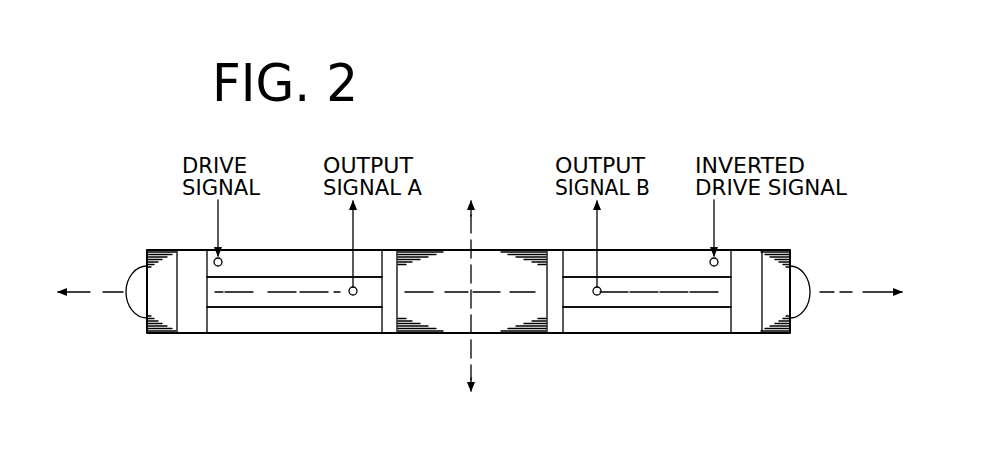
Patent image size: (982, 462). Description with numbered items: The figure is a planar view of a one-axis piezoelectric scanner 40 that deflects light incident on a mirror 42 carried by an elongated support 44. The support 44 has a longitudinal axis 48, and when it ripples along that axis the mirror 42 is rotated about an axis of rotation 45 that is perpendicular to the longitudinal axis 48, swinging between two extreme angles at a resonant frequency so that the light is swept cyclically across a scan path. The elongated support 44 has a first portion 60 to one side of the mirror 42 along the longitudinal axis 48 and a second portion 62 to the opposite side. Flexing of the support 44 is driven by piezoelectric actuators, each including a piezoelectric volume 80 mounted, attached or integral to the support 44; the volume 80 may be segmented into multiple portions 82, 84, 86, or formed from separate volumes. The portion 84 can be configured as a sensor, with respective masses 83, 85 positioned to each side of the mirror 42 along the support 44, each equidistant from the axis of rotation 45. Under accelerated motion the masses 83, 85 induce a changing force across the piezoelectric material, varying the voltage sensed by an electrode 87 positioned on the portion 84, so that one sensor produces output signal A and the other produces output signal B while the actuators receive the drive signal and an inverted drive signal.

The one-axis piezoelectric scanner 40 is at (558, 132).
The mirror 42 is at (500, 248).
The support 44 is at (753, 335).
The axis of rotation 45 is at (472, 347).
The longitudinal axis 48 is at (83, 290).
The first portion 60 is at (188, 248).
The second portion 62 is at (752, 248).
The piezoelectric volume 80 is at (270, 248).
The piezoelectric volume portion 82 is at (288, 272).
The mass 83 is at (360, 302).
The piezoelectric sensor portion 84 is at (270, 297).
The mass 85 is at (590, 303).
The piezoelectric volume portion 86 is at (288, 330).
The electrode 87 is at (350, 295).